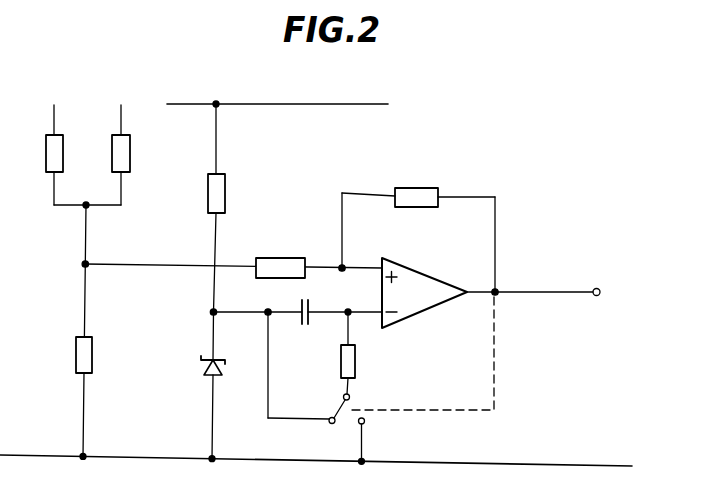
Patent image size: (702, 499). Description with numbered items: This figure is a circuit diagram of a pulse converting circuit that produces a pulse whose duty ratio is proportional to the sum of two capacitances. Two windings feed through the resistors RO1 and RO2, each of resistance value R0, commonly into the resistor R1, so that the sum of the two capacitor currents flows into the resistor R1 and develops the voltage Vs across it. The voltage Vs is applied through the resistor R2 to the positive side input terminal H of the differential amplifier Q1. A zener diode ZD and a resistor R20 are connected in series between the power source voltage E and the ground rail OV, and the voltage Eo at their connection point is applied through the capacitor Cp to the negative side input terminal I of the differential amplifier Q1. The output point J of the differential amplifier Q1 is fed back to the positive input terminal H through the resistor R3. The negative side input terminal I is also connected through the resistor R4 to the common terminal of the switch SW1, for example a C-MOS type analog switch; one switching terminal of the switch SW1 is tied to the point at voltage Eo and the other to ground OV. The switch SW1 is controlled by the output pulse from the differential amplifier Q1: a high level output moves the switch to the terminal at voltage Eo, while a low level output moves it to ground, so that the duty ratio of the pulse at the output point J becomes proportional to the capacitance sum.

The resistor RO2 is at (60, 135).
The resistor RO1 is at (128, 137).
The resistor R20 is at (222, 185).
The power source voltage E is at (286, 104).
The resistor R3 is at (410, 188).
The resistor R2 is at (296, 240).
The positive side input terminal H is at (345, 264).
The differential amplifier Q1 is at (447, 255).
The output point J is at (533, 280).
The voltage Vs is at (87, 267).
The voltage Eo is at (238, 311).
The negative side input terminal I is at (363, 298).
The capacitor Cp is at (305, 326).
The resistor R4 is at (356, 368).
The resistor R1 is at (107, 361).
The zener diode ZD is at (188, 387).
The switch SW1 is at (414, 372).
The ground 0V rail OV is at (328, 475).